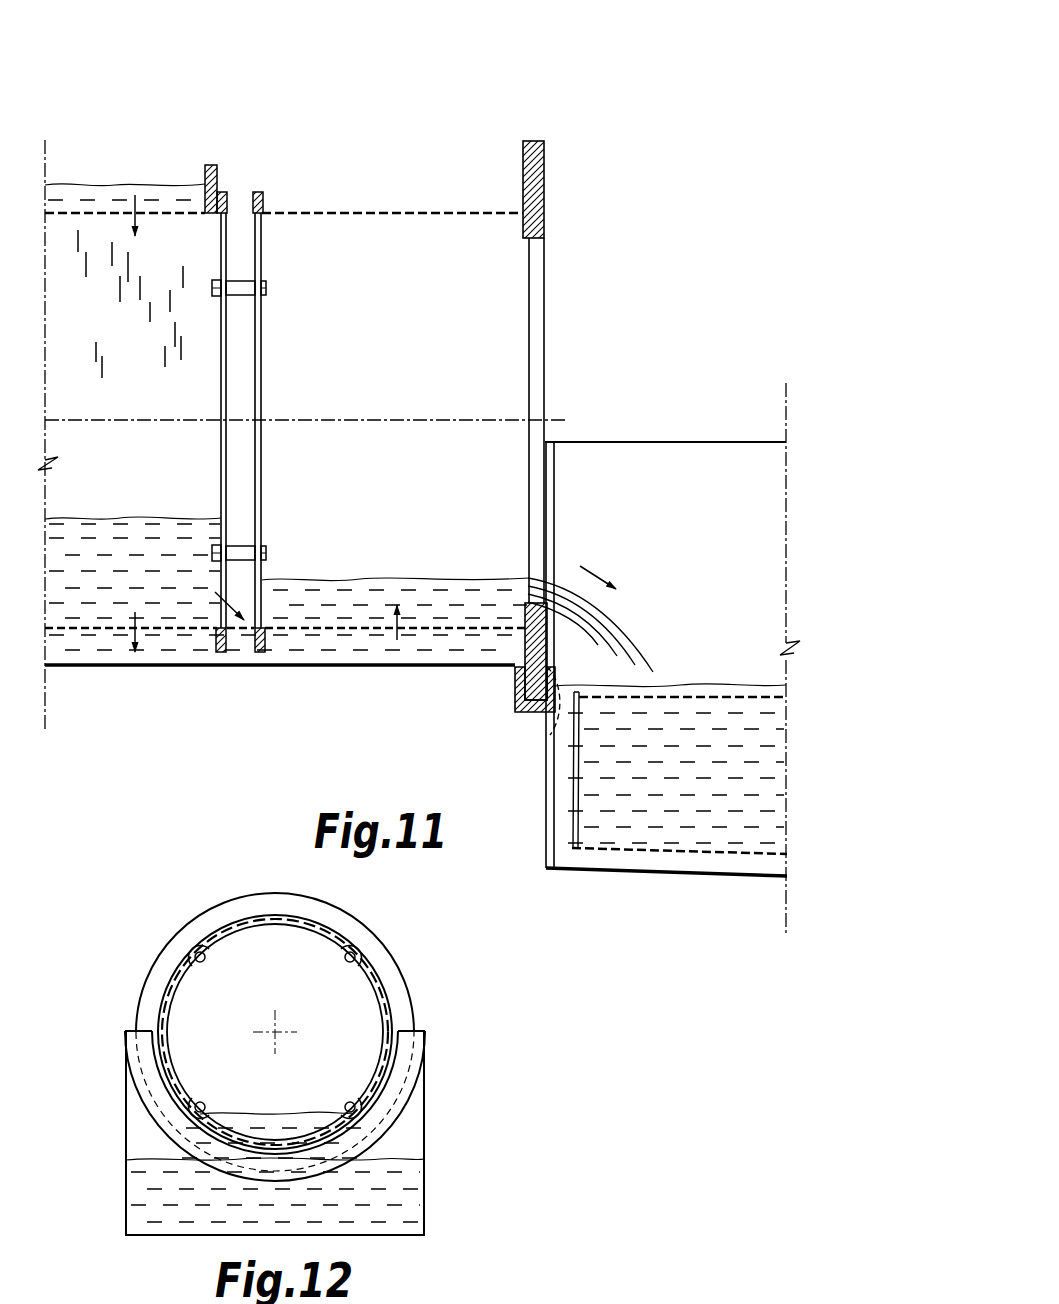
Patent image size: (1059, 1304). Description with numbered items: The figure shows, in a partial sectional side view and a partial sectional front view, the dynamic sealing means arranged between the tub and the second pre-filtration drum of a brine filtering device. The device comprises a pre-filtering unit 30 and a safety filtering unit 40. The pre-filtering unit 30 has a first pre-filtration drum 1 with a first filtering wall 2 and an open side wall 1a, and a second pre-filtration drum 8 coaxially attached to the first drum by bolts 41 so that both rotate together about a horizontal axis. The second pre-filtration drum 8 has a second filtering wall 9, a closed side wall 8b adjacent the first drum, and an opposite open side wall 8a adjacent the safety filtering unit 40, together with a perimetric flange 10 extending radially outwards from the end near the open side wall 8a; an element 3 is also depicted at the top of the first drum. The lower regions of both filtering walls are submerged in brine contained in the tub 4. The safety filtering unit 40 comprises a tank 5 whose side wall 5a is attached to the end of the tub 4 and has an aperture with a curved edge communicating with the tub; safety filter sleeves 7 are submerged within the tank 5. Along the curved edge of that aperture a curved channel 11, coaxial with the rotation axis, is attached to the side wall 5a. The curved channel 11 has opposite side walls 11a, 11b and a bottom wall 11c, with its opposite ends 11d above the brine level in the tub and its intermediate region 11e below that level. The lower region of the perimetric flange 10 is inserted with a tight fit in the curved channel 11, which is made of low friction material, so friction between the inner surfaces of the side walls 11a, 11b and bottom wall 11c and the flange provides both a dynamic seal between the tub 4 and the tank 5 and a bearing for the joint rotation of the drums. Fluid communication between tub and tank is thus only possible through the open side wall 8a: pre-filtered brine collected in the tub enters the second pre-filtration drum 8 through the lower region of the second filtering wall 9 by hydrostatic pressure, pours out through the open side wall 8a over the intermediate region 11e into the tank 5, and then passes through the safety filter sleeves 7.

In FIG. 11, the pre-filtering unit 30 is at (290, 82).
In FIG. 11, the first pre-filtration drum 1 is at (172, 218).
In FIG. 11, the open side wall 1a is at (221, 390).
In FIG. 11, the first filtering wall 2 is at (83, 212).
In FIG. 11, the tank top flange 3 is at (212, 165).
In FIG. 11, the tub 4 is at (107, 653).
In FIG. 11, the tank 5 is at (731, 876).
In FIG. 12, the tank 5 is at (393, 1237).
In FIG. 11, the side wall 5a is at (550, 812).
In FIG. 12, the side wall 5a is at (142, 1140).
In FIG. 11, the safety filter sleeve 7 is at (607, 848).
In FIG. 11, the second pre-filtration drum 8 is at (415, 252).
In FIG. 12, the second pre-filtration drum 8 is at (147, 948).
In FIG. 11, the open side wall 8a is at (540, 300).
In FIG. 12, the open side wall 8a is at (296, 987).
In FIG. 11, the closed side wall 8b is at (262, 376).
In FIG. 11, the second filtering wall 9 is at (335, 213).
In FIG. 12, the second filtering wall 9 is at (163, 998).
In FIG. 11, the perimetric flange 10 is at (545, 158).
In FIG. 12, the perimetric flange 10 is at (405, 995).
In FIG. 11, the curved channel 11 is at (508, 698).
In FIG. 12, the curved channel 11 is at (406, 1117).
In FIG. 11, the side wall 11a is at (555, 722).
In FIG. 12, the side wall 11a is at (403, 1062).
In FIG. 11, the side wall 11b is at (515, 680).
In FIG. 11, the bottom wall 11c is at (527, 713).
In FIG. 12, the bottom wall 11c is at (145, 1102).
In FIG. 12, the opposite ends 11d is at (125, 1038).
In FIG. 12, the intermediate region 11e is at (275, 1155).
In FIG. 11, the safety filtering unit 40 is at (740, 398).
In FIG. 11, the bolts 41 is at (266, 286).